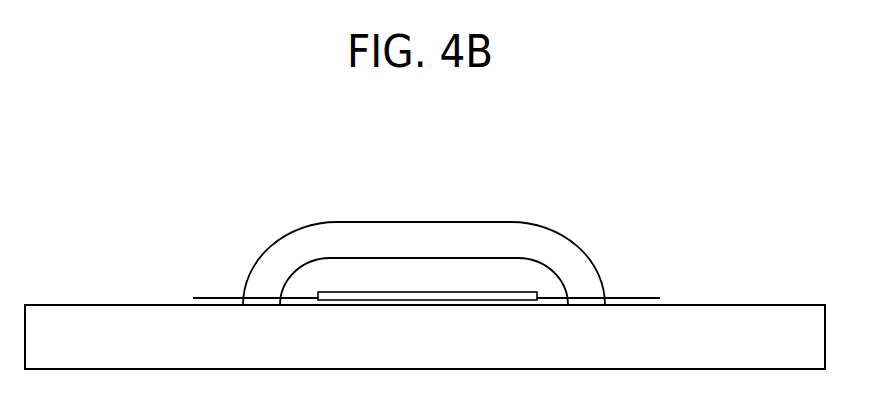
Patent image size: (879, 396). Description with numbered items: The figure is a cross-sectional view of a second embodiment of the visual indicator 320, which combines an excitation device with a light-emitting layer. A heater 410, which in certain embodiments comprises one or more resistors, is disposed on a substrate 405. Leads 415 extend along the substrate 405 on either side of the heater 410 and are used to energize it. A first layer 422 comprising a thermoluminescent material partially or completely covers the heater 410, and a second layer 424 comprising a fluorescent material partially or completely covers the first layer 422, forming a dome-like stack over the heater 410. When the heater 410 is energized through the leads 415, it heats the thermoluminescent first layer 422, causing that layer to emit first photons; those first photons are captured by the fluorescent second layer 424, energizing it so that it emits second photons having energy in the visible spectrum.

The visual indicator 320 is at (478, 190).
The substrate 405 is at (455, 348).
The heater 410 is at (532, 288).
The leads 415 is at (228, 297).
The first layer 422 is at (352, 268).
The second layer 424 is at (425, 228).